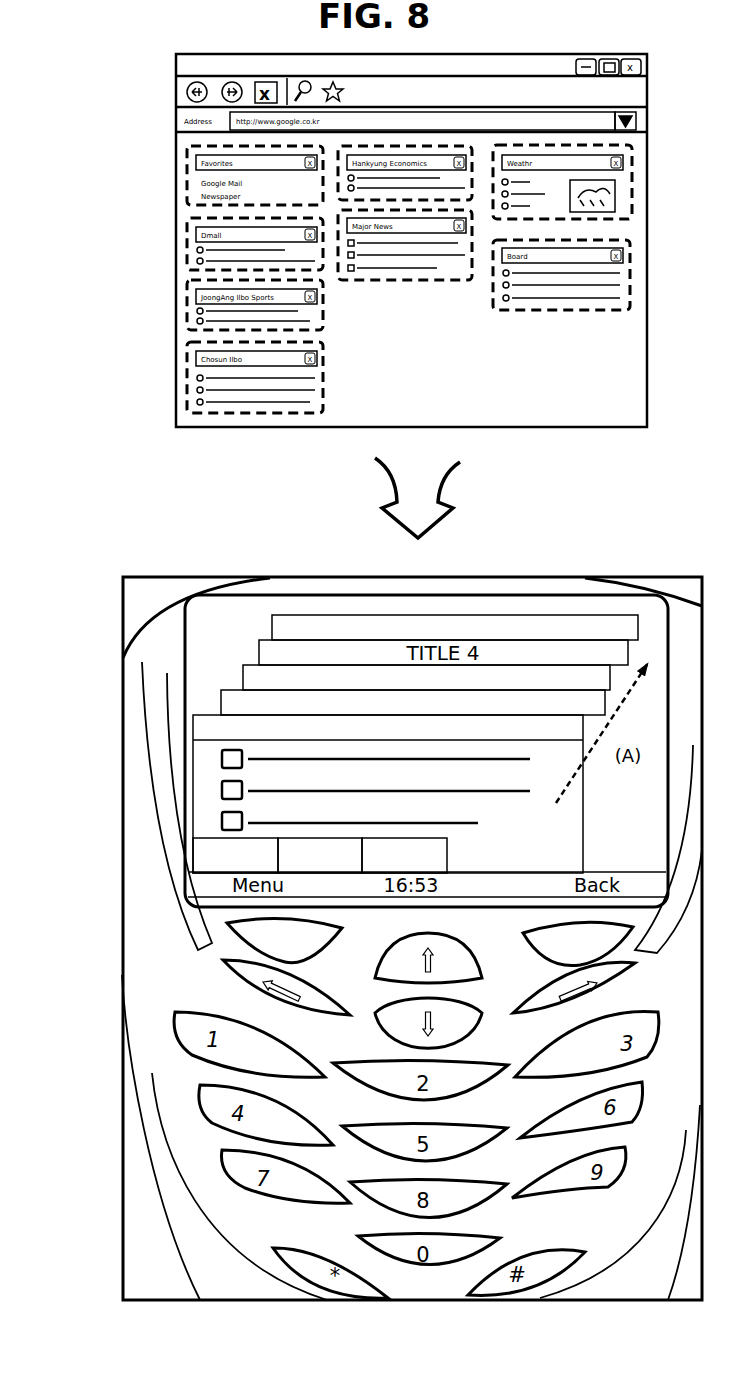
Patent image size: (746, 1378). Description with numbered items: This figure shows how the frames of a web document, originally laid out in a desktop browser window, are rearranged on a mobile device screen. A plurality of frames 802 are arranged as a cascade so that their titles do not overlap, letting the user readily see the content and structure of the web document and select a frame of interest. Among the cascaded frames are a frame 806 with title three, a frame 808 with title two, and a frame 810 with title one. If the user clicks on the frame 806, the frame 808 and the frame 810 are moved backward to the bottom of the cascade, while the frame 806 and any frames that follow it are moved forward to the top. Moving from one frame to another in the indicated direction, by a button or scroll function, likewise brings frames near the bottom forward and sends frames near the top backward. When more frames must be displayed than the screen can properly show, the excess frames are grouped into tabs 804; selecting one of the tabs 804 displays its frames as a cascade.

The frames 802 is at (600, 596).
The tabs 804 is at (191, 838).
The frame with title 3 806 is at (240, 663).
The frame with title 2 808 is at (219, 689).
The frame with title 1 810 is at (207, 714).